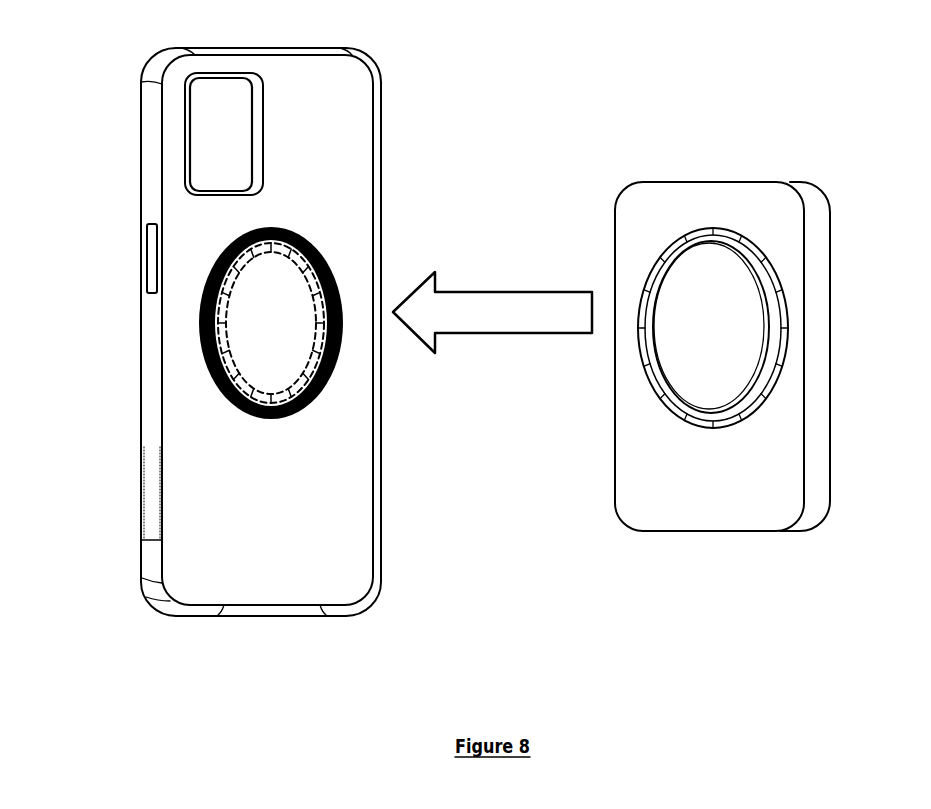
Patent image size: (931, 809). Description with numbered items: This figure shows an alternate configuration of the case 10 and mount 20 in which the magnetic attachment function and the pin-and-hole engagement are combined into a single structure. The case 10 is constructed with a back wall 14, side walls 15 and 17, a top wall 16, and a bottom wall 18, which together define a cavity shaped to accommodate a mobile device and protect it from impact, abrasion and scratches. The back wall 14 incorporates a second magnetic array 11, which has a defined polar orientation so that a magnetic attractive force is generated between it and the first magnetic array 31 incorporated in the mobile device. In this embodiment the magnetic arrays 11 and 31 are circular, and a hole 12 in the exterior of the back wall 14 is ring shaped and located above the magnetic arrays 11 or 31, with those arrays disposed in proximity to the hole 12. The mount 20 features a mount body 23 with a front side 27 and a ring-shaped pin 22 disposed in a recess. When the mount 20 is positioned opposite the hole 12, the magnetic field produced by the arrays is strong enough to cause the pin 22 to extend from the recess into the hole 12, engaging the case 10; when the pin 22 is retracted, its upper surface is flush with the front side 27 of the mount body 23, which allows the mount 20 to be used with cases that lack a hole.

The case 10 is at (388, 128).
The second magnetic array 11 is at (238, 310).
The hole 12 is at (222, 395).
The back wall 14 is at (333, 142).
The side wall 15 is at (155, 178).
The top wall 16 is at (225, 50).
The side wall 17 is at (375, 223).
The bottom wall 18 is at (292, 608).
The mount 20 is at (708, 168).
The pin 22 is at (653, 383).
The mount body 23 is at (822, 293).
The front side 27 is at (662, 224).
The first magnetic array 31 is at (238, 310).